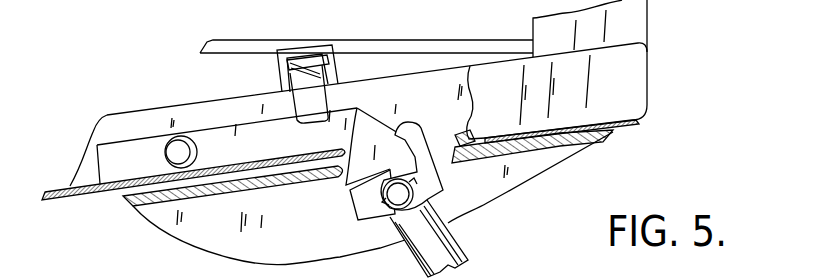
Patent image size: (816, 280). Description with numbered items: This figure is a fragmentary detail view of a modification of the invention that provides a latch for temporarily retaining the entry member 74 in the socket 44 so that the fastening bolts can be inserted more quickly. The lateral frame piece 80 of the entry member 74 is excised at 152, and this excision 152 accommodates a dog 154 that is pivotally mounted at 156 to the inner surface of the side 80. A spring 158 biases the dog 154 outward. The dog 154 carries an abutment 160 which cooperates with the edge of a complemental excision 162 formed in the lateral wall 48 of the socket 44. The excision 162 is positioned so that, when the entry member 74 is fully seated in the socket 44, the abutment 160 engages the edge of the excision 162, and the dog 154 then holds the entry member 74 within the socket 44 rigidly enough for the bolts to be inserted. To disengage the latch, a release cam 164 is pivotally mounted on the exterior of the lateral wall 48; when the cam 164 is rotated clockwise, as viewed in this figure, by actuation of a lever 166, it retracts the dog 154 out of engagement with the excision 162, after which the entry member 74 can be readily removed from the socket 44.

The socket 44 is at (545, 178).
The lateral wall 48 is at (200, 197).
The entry member 74 is at (656, 28).
The lateral frame piece 80 is at (146, 118).
The excision 152 is at (453, 140).
The dog 154 is at (360, 127).
The pivot 156 is at (167, 153).
The spring 158 is at (280, 72).
The abutment 160 is at (348, 216).
The complemental excision 162 is at (340, 180).
The release cam 164 is at (433, 180).
The lever 166 is at (458, 242).